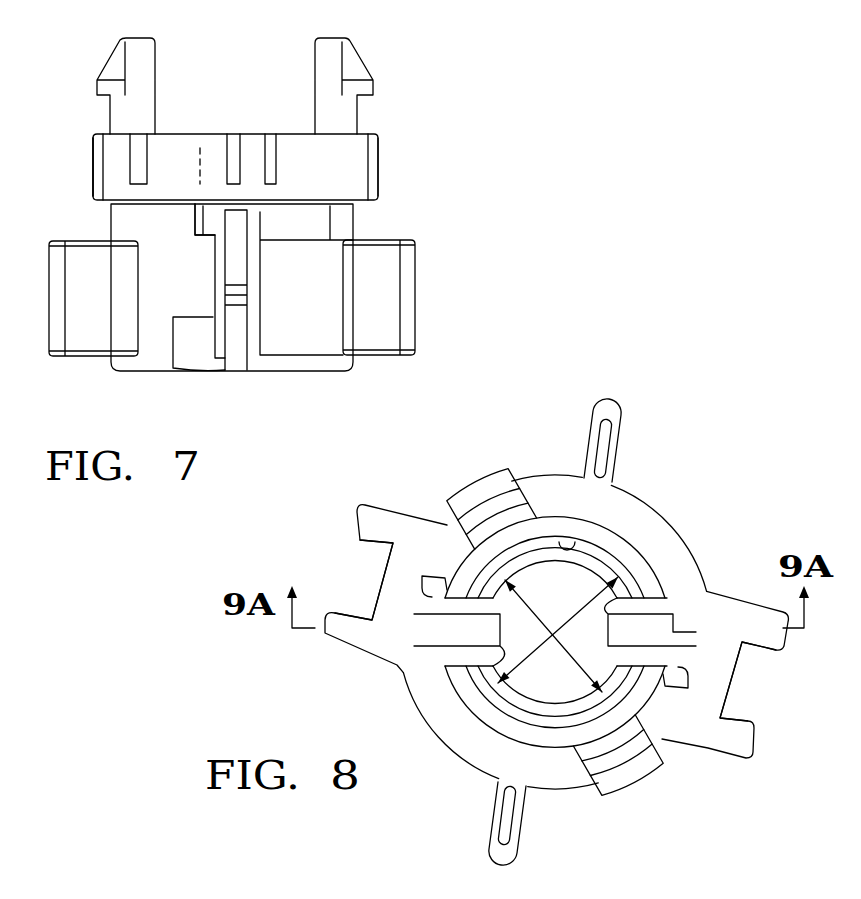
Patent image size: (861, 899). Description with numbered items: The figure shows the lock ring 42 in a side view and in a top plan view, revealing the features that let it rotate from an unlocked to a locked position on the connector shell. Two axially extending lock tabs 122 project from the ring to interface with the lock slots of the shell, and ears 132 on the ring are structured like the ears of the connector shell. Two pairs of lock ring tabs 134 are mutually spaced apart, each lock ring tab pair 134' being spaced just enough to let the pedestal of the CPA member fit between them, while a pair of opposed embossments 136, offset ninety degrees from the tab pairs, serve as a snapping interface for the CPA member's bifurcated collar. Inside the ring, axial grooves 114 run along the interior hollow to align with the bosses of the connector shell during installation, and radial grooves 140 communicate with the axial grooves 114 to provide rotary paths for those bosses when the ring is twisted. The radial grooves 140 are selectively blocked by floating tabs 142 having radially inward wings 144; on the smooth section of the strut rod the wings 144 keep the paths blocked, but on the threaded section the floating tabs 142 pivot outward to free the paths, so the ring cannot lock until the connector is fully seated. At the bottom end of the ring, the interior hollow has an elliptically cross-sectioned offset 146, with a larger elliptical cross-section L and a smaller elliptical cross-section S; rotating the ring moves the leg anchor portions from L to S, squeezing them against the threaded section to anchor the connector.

In FIG. 7, the lock ring 42 is at (442, 223).
In FIG. 8, the lock ring 42 is at (702, 491).
In FIG. 7, the axial grooves 114 is at (200, 148).
In FIG. 8, the axial grooves 114 is at (437, 573).
In FIG. 7, the lock tabs 122 is at (150, 82).
In FIG. 8, the lock tabs 122 is at (456, 486).
In FIG. 7, the ears 132 is at (50, 308).
In FIG. 8, the ears 132 is at (614, 414).
In FIG. 8, the lock ring tabs 134 is at (523, 608).
In FIG. 7, the lock ring tab pair 134' is at (115, 219).
In FIG. 8, the lock ring tab pair 134' is at (521, 633).
In FIG. 7, the embossments 136 is at (93, 175).
In FIG. 8, the embossments 136 is at (595, 425).
In FIG. 7, the radial grooves 140 is at (302, 225).
In FIG. 7, the floating tabs 142 is at (247, 260).
In FIG. 8, the wings 144 is at (620, 576).
In FIG. 8, the offset 146 is at (443, 770).
In FIG. 8, the larger elliptical cross-section L is at (582, 600).
In FIG. 8, the smaller elliptical cross-section S is at (428, 775).